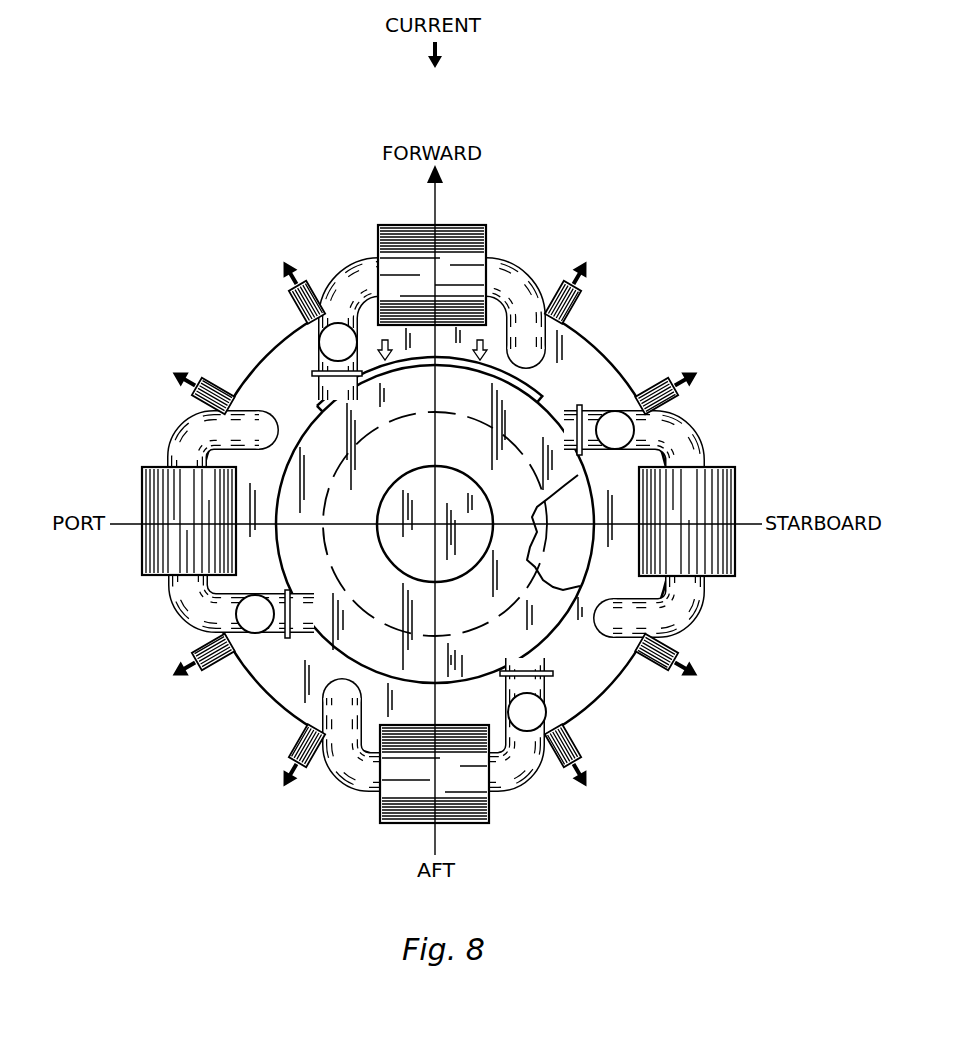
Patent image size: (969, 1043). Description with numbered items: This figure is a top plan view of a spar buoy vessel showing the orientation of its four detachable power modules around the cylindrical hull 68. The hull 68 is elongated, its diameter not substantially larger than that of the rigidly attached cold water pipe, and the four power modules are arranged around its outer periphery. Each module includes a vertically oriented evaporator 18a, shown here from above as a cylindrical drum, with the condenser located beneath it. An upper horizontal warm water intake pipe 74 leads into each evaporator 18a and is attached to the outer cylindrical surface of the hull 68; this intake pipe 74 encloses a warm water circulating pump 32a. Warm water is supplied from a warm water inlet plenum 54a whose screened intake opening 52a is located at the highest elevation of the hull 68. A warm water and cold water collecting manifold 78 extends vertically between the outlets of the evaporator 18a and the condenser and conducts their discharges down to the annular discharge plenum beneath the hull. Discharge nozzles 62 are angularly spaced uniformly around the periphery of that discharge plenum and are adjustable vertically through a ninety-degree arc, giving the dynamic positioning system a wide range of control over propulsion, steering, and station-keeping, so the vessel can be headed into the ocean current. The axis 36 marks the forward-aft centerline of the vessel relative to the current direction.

The evaporator 18a is at (378, 238).
The warm water circulating pump 32a is at (318, 357).
The longitudinal axis 36 is at (437, 200).
The screened intake opening 52a is at (537, 386).
The warm water inlet plenum 54a is at (575, 570).
The discharge nozzles 62 is at (298, 302).
The cylindrical hull 68 is at (560, 628).
The warm water intake pipe 74 is at (697, 428).
The warm water and cold water collecting manifold 78 is at (522, 270).